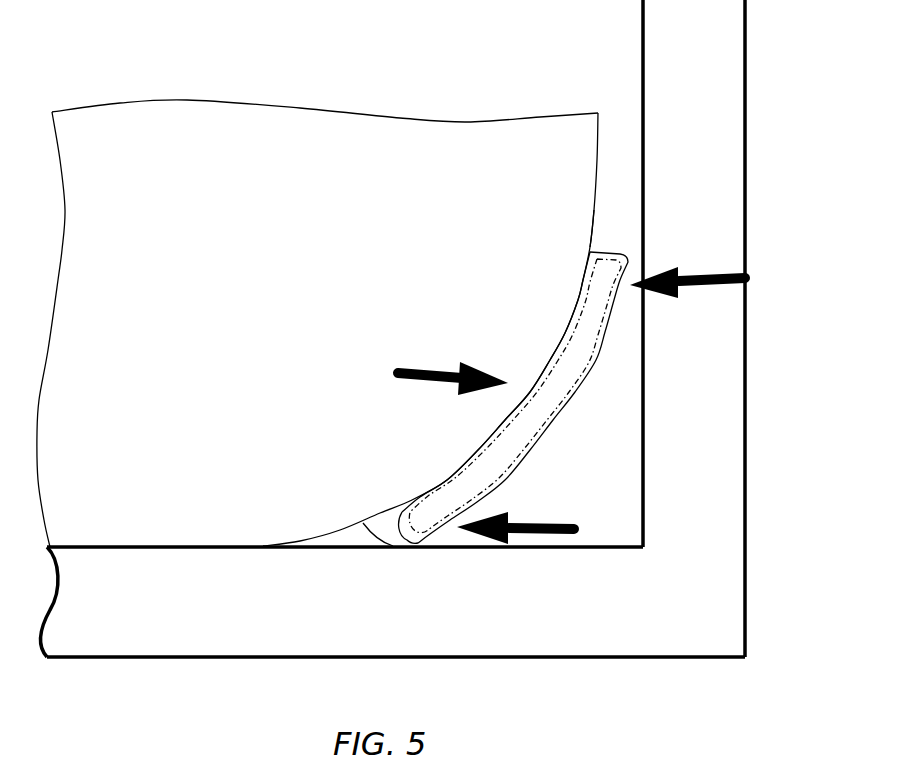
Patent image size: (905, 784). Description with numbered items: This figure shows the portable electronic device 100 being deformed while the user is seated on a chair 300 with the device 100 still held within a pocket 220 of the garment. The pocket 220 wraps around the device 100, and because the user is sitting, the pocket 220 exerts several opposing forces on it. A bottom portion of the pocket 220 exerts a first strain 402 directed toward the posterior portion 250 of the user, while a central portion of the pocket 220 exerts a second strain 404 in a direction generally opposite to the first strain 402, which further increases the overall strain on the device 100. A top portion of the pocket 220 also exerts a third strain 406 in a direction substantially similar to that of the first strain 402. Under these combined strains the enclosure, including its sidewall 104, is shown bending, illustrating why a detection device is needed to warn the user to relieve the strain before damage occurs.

The device 100 is at (612, 283).
The sidewall 104 is at (537, 410).
The pocket 220 is at (612, 247).
The posterior portion 250 is at (368, 284).
The chair 300 is at (186, 606).
The first strain 402 is at (527, 520).
The second strain 404 is at (445, 369).
The third strain 406 is at (714, 276).